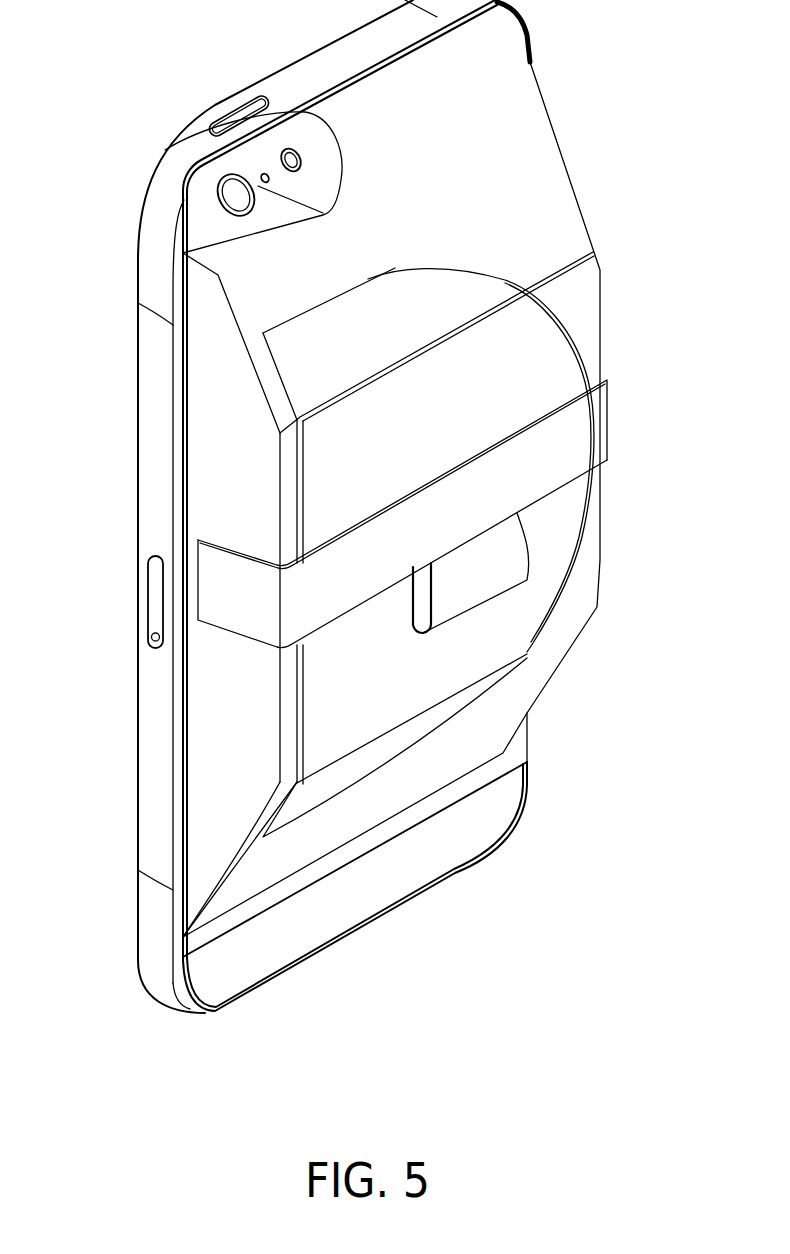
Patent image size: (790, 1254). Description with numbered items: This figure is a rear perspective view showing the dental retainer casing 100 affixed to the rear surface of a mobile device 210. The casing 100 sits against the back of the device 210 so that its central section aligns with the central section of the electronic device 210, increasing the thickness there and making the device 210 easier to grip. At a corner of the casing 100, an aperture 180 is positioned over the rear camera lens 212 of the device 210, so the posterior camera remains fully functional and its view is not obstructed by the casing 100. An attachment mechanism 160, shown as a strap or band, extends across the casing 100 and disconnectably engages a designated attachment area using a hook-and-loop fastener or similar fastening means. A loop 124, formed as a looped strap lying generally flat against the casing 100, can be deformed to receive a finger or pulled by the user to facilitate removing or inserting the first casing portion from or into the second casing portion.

The dental retainer casing 100 is at (614, 128).
The mobile device 210 is at (137, 463).
The rear camera lens 212 is at (282, 156).
The aperture 180 is at (198, 229).
The attachment mechanism 160 is at (593, 427).
The loop 124 is at (510, 555).